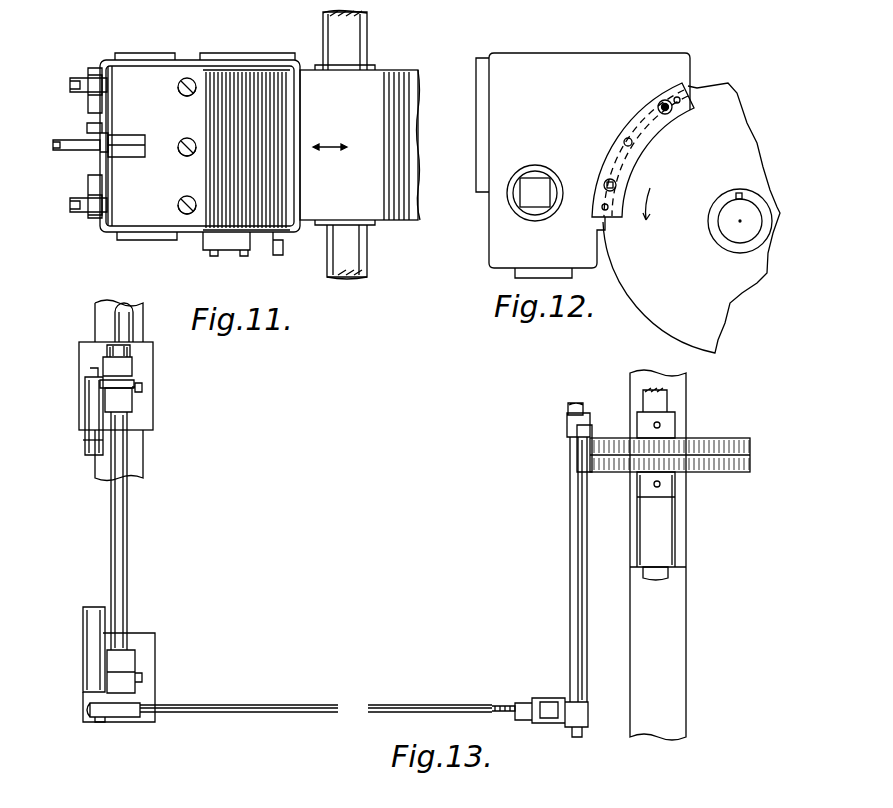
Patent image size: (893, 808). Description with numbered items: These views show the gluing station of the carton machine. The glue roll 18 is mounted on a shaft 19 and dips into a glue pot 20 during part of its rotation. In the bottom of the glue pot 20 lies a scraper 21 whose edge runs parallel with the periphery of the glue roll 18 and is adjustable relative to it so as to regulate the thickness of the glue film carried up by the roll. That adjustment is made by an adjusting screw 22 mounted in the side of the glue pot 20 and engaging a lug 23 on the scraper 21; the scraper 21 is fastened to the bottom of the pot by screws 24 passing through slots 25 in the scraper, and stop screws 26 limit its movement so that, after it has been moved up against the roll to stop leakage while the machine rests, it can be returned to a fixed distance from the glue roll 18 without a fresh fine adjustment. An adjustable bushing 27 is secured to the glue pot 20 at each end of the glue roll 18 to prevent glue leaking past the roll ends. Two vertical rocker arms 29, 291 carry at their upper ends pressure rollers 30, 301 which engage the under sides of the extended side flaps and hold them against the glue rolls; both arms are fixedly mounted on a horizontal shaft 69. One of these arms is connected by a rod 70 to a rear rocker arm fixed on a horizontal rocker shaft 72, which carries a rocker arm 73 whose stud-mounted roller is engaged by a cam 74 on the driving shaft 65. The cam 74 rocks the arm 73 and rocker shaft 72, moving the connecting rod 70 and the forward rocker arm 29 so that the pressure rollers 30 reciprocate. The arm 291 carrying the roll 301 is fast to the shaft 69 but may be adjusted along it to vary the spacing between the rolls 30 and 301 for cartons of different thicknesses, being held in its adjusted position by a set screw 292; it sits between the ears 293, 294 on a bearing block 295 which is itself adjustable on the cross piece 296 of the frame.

In FIG. 11, the glue roll 18 is at (392, 70).
In FIG. 12, the glue roll 18 is at (691, 218).
In FIG. 11, the shaft 19 is at (350, 253).
In FIG. 12, the shaft 19 is at (737, 224).
In FIG. 11, the glue pot 20 is at (190, 63).
In FIG. 12, the glue pot 20 is at (583, 165).
In FIG. 11, the scraper 21 is at (132, 176).
In FIG. 11, the adjusting screw 22 is at (75, 140).
In FIG. 11, the lug 23 is at (141, 135).
In FIG. 11, the screws 24 is at (190, 95).
In FIG. 11, the slots 25 is at (178, 87).
In FIG. 11, the stop screws 26 is at (70, 83).
In FIG. 11, the adjustable bushing 27 is at (272, 72).
In FIG. 12, the adjustable bushing 27 is at (663, 122).
In FIG. 13, the vertical rocker arm 29 is at (140, 673).
In FIG. 13, the pressure roller 30 is at (84, 625).
In FIG. 13, the driving shaft 65 is at (666, 575).
In FIG. 13, the horizontal shaft 69 is at (130, 590).
In FIG. 13, the rod 70 is at (433, 705).
In FIG. 13, the rocker shaft 72 is at (575, 553).
In FIG. 13, the rocker arm 73 is at (568, 430).
In FIG. 13, the cam 74 is at (716, 452).
In FIG. 13, the vertical rocker arm 291 is at (112, 387).
In FIG. 13, the clamp block 292 is at (141, 392).
In FIG. 13, the ear 293 is at (110, 358).
In FIG. 13, the ear 294 is at (86, 403).
In FIG. 13, the bearing block 295 is at (153, 383).
In FIG. 13, the cross piece 296 is at (133, 316).
In FIG. 13, the pressure roller 301 is at (84, 441).